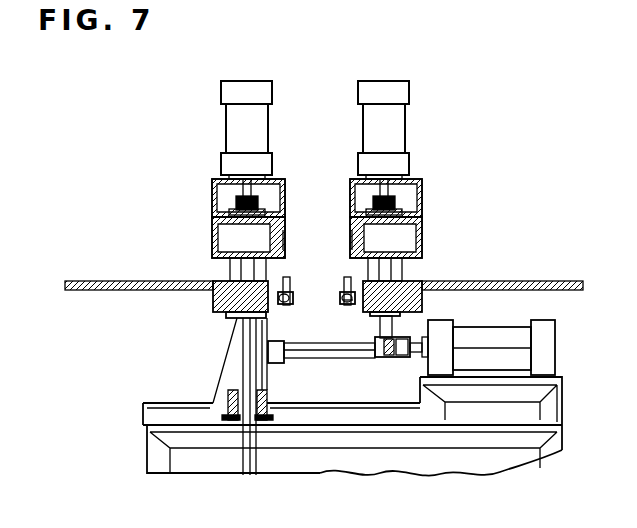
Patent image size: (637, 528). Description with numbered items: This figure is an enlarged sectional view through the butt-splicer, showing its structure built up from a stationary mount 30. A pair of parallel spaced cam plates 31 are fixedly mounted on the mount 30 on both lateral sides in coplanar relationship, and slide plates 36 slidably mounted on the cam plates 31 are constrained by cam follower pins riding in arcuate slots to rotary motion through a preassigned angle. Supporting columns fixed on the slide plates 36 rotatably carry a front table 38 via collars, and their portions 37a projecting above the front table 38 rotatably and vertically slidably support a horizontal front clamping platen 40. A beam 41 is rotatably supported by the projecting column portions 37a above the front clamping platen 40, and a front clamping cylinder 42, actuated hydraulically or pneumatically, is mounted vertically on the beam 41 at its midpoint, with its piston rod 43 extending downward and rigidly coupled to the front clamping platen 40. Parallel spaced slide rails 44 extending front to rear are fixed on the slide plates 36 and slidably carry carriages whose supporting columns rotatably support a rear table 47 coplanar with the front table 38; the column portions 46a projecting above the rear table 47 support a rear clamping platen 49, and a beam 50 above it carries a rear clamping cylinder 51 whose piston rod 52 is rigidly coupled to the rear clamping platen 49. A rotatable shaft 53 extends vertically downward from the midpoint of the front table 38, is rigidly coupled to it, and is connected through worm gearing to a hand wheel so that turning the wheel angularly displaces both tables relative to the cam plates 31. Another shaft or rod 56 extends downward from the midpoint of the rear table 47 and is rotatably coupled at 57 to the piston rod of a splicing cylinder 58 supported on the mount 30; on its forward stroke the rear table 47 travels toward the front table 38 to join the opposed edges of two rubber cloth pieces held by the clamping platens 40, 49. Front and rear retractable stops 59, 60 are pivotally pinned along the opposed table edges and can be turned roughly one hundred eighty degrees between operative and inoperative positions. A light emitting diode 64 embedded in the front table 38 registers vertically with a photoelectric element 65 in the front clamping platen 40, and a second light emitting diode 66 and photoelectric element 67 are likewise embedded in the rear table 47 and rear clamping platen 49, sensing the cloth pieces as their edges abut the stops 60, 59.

The stationary mount 30 is at (165, 456).
The cam plate 31 is at (158, 408).
The slide plate 36 is at (388, 395).
The projecting column portion 37a is at (233, 270).
The front table 38 is at (95, 292).
The front clamping platen 40 is at (212, 232).
The beam 41 is at (215, 196).
The front clamping cylinder 42 is at (240, 88).
The piston rod 43 is at (218, 184).
The slide rail 44 is at (302, 368).
The projecting column portion 46a is at (395, 269).
The rear table 47 is at (560, 280).
The rear clamping platen 49 is at (422, 232).
The beam 50 is at (422, 192).
The rear clamping cylinder 51 is at (386, 88).
The piston rod 52 is at (415, 188).
The rotatable shaft 53 is at (248, 380).
The shaft or rod 56 is at (393, 325).
The rotatable coupling 57 is at (395, 360).
The splicing cylinder 58 is at (548, 345).
The front retractable stop 59 is at (244, 318).
The rear retractable stop 60 is at (347, 305).
The light emitting diode 64 is at (300, 296).
The photoelectric element 65 is at (283, 240).
The light emitting diode 66 is at (346, 278).
The photoelectric element 67 is at (352, 258).